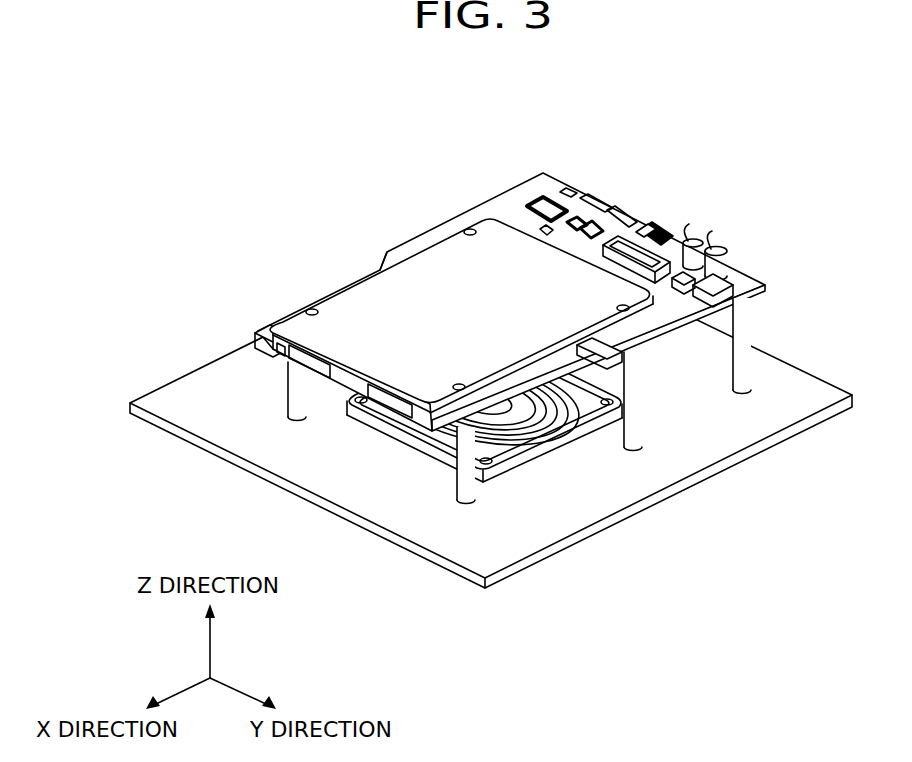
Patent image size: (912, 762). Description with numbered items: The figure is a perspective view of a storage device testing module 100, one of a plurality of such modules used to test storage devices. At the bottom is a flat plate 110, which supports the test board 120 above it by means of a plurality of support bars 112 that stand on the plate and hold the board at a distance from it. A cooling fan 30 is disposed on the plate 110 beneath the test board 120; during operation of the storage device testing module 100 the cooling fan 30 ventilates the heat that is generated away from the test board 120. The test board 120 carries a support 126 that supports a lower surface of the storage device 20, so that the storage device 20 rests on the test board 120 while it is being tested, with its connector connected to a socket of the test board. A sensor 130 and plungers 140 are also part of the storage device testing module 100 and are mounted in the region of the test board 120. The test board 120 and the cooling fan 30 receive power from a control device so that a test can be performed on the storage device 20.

The storage device testing module 100 is at (490, 91).
The plate 110 is at (497, 550).
The support bars 112 is at (463, 493).
The test board 120 is at (423, 243).
The support 126 is at (262, 332).
The sensor 130 is at (546, 204).
The plungers 140 is at (628, 372).
The storage device 20 is at (328, 313).
The cooling fan 30 is at (522, 468).